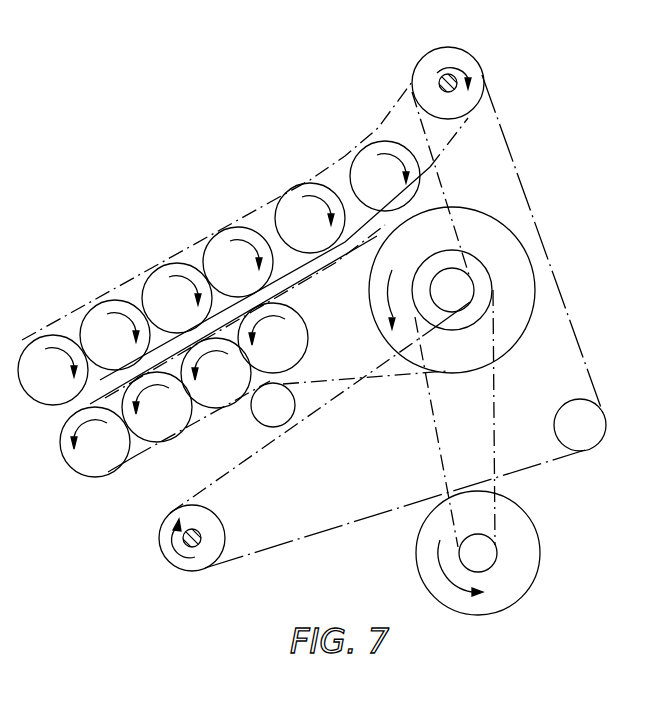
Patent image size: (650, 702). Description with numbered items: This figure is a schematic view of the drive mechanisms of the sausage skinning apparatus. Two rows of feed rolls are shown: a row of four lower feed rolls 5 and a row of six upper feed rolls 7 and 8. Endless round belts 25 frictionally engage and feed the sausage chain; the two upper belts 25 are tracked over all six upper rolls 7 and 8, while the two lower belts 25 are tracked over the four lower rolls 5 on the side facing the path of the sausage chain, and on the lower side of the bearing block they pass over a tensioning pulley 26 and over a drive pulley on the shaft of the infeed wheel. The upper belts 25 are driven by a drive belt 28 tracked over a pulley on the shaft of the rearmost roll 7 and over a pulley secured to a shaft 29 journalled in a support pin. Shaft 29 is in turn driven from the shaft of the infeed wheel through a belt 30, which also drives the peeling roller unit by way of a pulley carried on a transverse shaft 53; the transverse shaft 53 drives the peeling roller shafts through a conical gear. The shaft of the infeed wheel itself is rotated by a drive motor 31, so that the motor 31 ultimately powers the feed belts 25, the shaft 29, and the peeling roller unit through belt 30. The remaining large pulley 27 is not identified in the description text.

The lower feed rolls 5 is at (168, 427).
The upper feed rolls 7 is at (222, 238).
The upper feed roll 8 is at (35, 356).
The endless round belts 25 is at (117, 293).
The tensioning pulley 26 is at (256, 414).
The drum pulley 27 is at (527, 328).
The drive belt 28 is at (398, 96).
The shaft 29 is at (447, 82).
The belt 30 is at (518, 168).
The drive motor 31 is at (527, 548).
The transverse shaft 53 is at (200, 536).